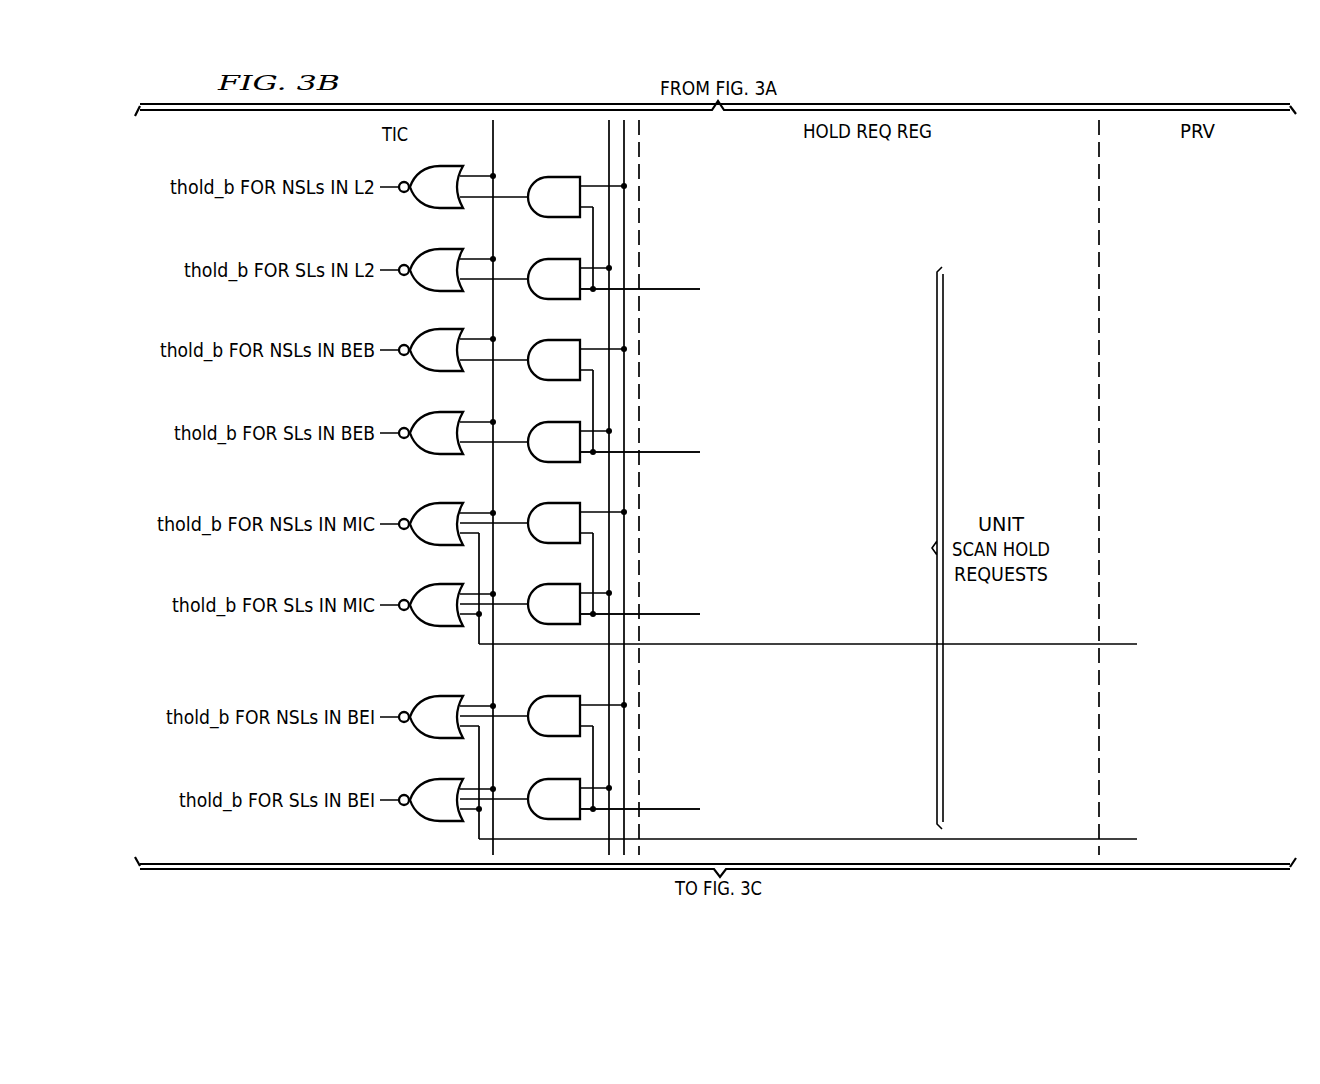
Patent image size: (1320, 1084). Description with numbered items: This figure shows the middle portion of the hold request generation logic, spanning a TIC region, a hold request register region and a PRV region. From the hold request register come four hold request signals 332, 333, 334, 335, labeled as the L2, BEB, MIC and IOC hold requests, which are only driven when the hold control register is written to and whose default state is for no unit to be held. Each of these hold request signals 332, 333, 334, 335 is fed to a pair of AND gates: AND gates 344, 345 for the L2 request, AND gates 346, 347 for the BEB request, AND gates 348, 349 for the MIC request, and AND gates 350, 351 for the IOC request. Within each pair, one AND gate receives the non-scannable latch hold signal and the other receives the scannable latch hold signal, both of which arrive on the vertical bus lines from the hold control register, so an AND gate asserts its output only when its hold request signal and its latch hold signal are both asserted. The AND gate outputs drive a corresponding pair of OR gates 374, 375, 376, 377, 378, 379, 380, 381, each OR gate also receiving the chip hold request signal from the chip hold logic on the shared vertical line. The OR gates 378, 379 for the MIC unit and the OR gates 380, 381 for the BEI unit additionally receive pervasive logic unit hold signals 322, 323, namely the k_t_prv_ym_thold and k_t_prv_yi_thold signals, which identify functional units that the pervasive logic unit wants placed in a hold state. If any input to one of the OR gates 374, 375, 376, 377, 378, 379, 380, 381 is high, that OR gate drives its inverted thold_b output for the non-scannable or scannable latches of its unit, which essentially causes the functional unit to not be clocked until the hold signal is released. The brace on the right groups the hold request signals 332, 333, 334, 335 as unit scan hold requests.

The pervasive logic unit hold signal 322 is at (1117, 645).
The pervasive logic unit hold signal 323 is at (1117, 838).
The hold request signal 332 is at (656, 289).
The hold request signal 333 is at (656, 452).
The hold request signal 334 is at (656, 614).
The hold request signal 335 is at (656, 809).
The AND gate 344 is at (542, 178).
The AND gate 345 is at (542, 260).
The AND gate 346 is at (542, 341).
The AND gate 347 is at (542, 423).
The AND gate 348 is at (542, 504).
The AND gate 349 is at (542, 585).
The AND gate 350 is at (542, 697).
The AND gate 351 is at (542, 780).
The OR gate 374 is at (423, 208).
The OR gate 375 is at (423, 291).
The OR gate 376 is at (423, 371).
The OR gate 377 is at (423, 454).
The OR gate 378 is at (423, 545).
The OR gate 379 is at (423, 626).
The OR gate 380 is at (423, 738).
The OR gate 381 is at (423, 821).